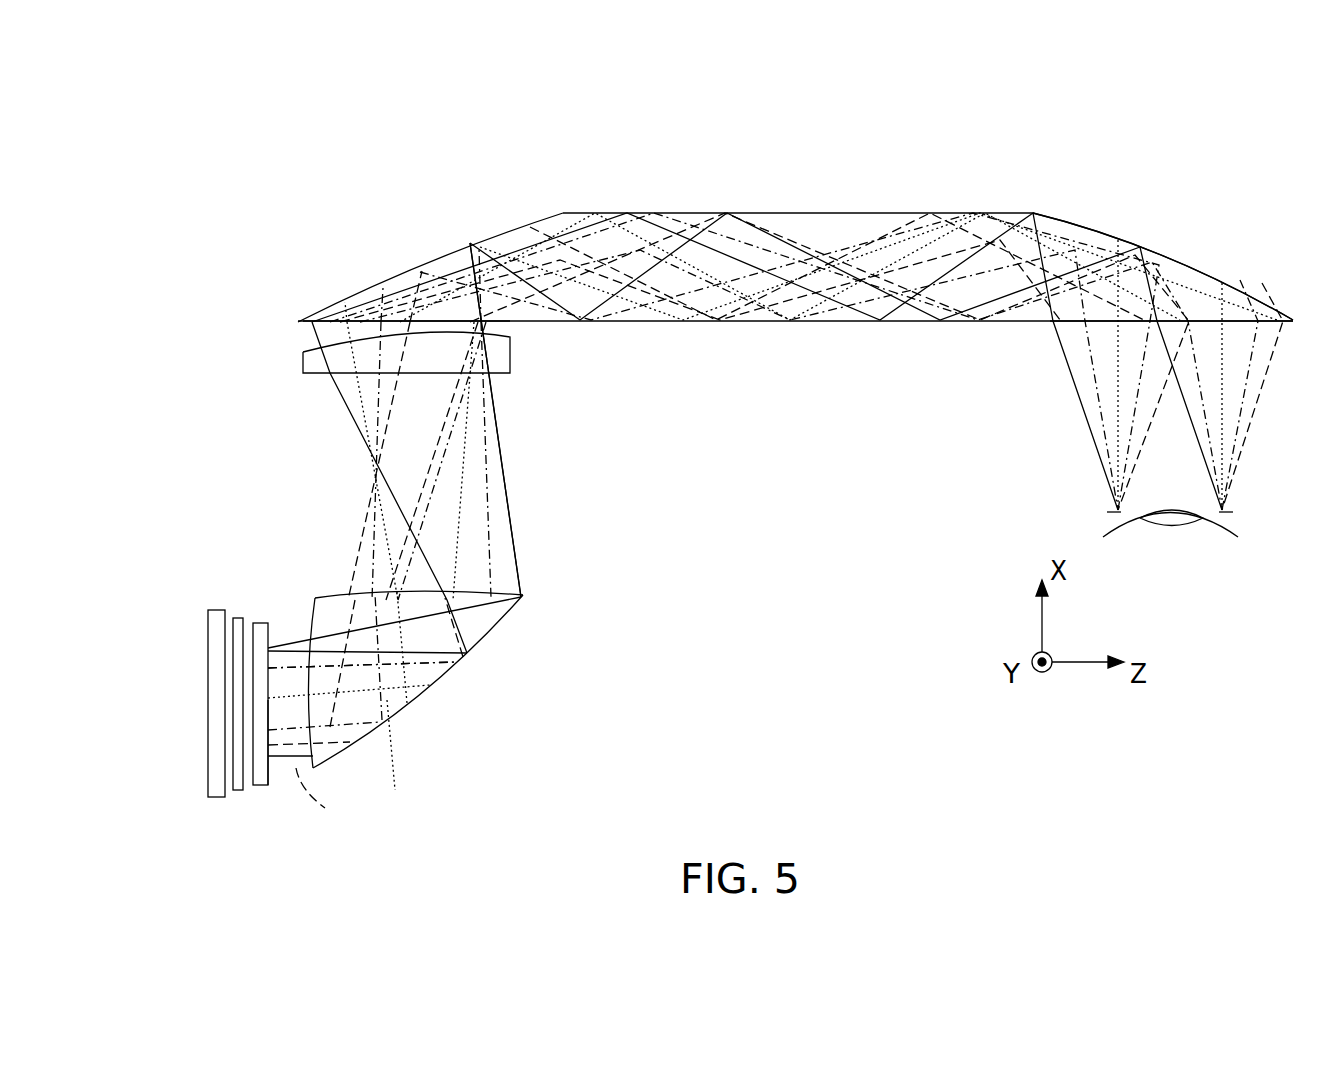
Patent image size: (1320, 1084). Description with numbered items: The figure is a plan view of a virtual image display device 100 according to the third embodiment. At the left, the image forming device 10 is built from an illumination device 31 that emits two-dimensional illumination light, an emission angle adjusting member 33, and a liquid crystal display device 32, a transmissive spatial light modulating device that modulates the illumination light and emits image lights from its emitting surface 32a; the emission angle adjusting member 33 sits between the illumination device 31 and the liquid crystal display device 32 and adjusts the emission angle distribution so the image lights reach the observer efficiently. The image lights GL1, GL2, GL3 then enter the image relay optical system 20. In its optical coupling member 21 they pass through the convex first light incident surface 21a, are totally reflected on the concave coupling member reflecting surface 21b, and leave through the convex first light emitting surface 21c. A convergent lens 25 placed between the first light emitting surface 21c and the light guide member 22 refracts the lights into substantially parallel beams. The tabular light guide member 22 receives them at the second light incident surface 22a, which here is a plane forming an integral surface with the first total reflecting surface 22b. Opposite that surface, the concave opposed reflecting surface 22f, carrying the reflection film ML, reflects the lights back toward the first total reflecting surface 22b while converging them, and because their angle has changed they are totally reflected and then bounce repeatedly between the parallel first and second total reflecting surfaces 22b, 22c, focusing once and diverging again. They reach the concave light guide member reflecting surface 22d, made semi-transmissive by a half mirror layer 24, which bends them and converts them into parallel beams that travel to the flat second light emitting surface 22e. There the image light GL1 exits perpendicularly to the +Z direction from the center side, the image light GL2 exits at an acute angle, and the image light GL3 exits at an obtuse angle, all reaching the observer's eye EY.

The virtual image display device 100 is at (613, 146).
The image forming device 10 is at (187, 644).
The illumination device 31 is at (215, 772).
The liquid crystal display device 32 is at (258, 625).
The emitting surface 32a is at (266, 770).
The emission angle adjusting member 33 is at (240, 793).
The image relay optical system 20 is at (685, 602).
The optical coupling member 21 is at (564, 581).
The first light incident surface 21a is at (307, 622).
The coupling member reflecting surface 21b is at (486, 650).
The first light emitting surface 21c is at (500, 596).
The convergent lens 25 is at (512, 350).
The light guide member 22 is at (829, 159).
The second light incident surface 22a is at (302, 333).
The first total reflecting surface 22b is at (786, 323).
The second total reflecting surface 22c is at (707, 213).
The light guide member reflecting surface 22d is at (1070, 226).
The second light emitting surface 22e is at (1110, 323).
The opposed reflecting surface 22f is at (415, 274).
The half mirror layer 24 is at (1137, 247).
The reflection film ML is at (370, 292).
The image light GL1 is at (396, 758).
The image light GL2 is at (287, 610).
The image light GL3 is at (324, 802).
The eye EY is at (1148, 521).